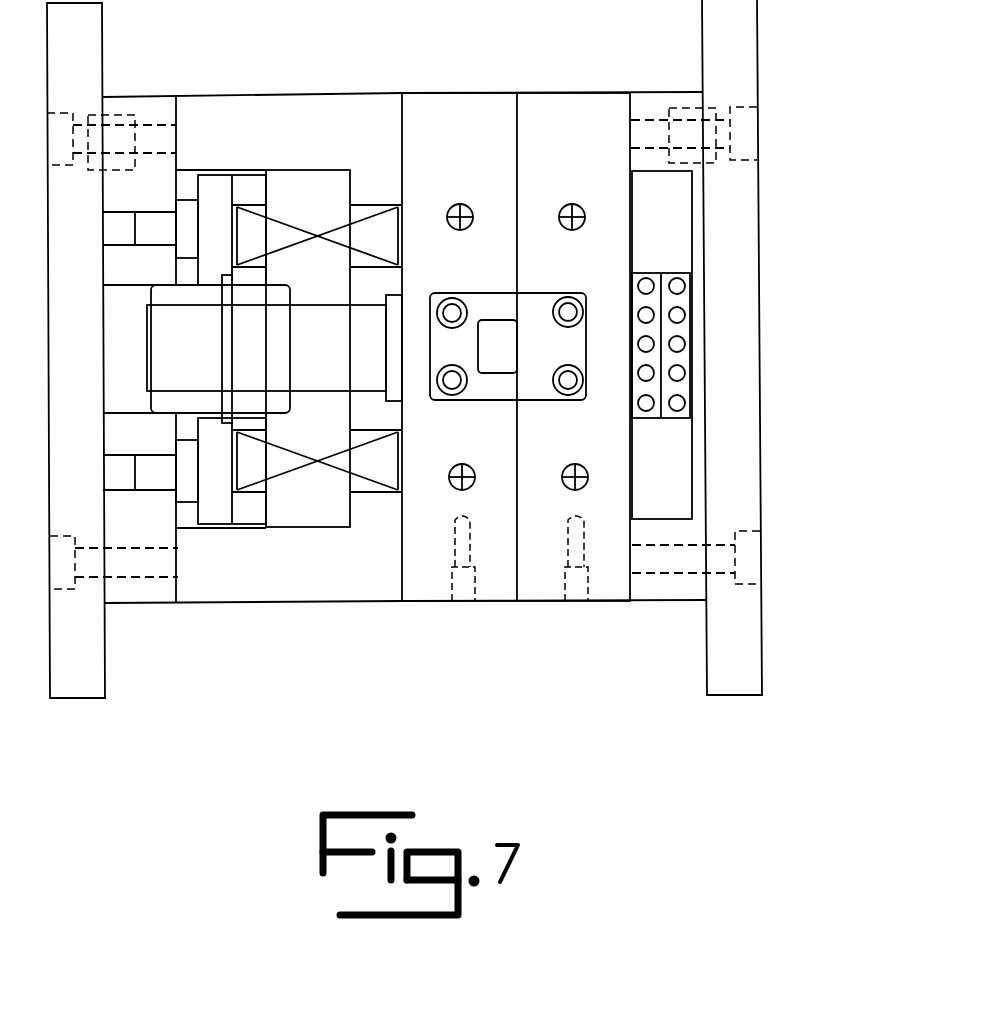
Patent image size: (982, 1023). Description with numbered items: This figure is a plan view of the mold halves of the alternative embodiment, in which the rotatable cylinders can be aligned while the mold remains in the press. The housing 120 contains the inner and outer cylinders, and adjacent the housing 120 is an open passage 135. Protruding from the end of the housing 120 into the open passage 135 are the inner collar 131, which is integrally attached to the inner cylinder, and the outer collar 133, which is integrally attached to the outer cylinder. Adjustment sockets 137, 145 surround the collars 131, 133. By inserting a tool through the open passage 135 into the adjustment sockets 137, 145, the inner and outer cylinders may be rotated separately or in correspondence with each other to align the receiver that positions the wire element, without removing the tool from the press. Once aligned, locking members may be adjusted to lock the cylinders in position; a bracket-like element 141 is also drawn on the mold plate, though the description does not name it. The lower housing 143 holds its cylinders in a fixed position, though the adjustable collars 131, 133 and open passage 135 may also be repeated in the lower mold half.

The housing 120 is at (548, 92).
The inner collar 131 is at (680, 404).
The outer collar 133 is at (647, 406).
The open passage 135 is at (668, 217).
The adjustment socket 137 is at (648, 281).
The connector bracket 141 is at (567, 385).
The lower housing 143 is at (308, 517).
The adjustment socket 145 is at (680, 286).